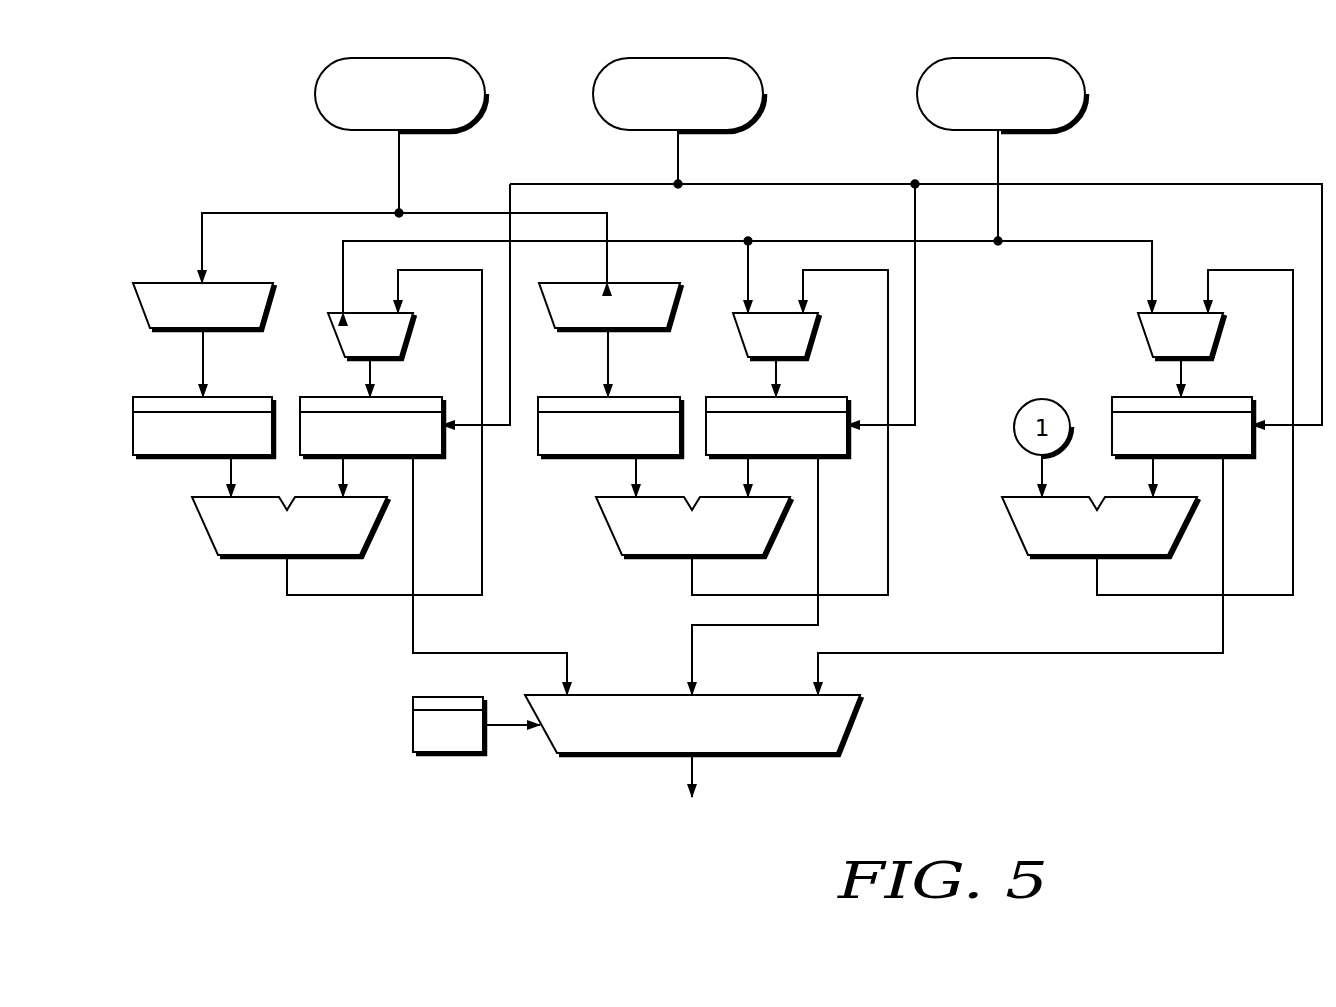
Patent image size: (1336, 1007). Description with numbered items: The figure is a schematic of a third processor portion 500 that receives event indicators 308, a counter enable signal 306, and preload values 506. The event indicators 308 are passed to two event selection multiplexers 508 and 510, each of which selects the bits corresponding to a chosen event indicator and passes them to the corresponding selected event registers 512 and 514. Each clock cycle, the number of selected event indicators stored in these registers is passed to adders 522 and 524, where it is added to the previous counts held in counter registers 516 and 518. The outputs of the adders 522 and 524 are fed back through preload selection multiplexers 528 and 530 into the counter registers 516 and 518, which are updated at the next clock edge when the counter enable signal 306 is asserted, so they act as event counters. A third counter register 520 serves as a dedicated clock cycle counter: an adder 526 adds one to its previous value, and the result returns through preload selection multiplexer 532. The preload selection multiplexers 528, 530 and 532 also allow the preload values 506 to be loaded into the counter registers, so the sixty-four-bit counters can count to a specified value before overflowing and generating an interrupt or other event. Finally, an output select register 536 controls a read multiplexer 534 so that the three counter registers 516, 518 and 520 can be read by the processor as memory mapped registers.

The event indicators 308 is at (419, 57).
The counter enable signal 306 is at (701, 57).
The preload values 506 is at (1023, 57).
The event selection multiplexer 508 is at (246, 262).
The event selection multiplexer 510 is at (654, 262).
The selected event register 512 is at (232, 396).
The selected event register 514 is at (638, 396).
The counter register 516 is at (400, 396).
The counter register 518 is at (806, 396).
The counter register 520 is at (1212, 396).
The adder 522 is at (198, 512).
The adder 524 is at (603, 512).
The adder 526 is at (1008, 512).
The preload selection multiplexer 528 is at (410, 332).
The preload selection multiplexer 530 is at (815, 332).
The preload selection multiplexer 532 is at (1220, 332).
The read multiplexer 534 is at (853, 724).
The output select register 536 is at (411, 720).
The processor portion 500 is at (540, 830).